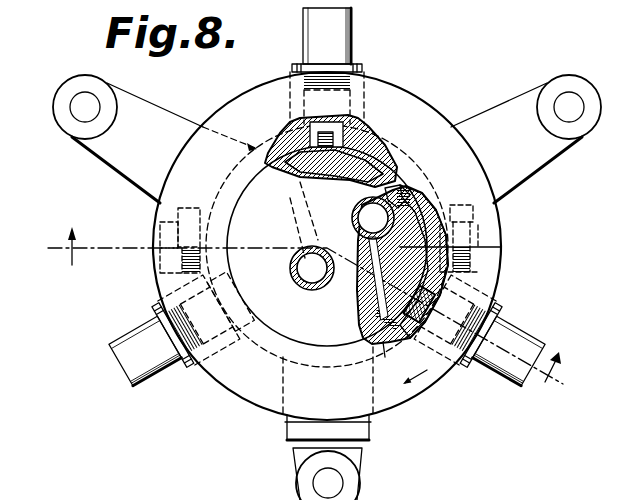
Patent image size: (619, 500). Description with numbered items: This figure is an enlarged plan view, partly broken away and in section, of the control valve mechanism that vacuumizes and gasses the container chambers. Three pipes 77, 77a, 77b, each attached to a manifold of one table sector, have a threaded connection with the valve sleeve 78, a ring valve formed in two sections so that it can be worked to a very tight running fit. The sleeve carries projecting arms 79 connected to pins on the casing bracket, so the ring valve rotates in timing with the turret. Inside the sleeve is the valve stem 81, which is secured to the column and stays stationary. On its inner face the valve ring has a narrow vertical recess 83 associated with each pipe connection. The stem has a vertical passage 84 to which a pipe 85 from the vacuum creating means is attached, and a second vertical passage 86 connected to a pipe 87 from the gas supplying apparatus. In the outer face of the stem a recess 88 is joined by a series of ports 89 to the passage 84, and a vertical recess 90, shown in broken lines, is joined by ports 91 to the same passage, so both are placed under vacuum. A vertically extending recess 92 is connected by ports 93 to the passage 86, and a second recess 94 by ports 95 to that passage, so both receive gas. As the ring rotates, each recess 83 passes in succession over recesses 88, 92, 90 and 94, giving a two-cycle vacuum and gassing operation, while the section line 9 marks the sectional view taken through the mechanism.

The section line 9- 9 is at (303, 315).
The pipe 77 is at (143, 355).
The pipe 77a is at (515, 367).
The pipe 77b is at (325, 37).
The valve sleeve 78 is at (477, 283).
The projecting arms 79 is at (138, 158).
The valve stem 81 is at (273, 318).
The recess 83 is at (303, 123).
The passage 84 is at (312, 278).
The pipe 85 is at (296, 266).
The passage 86 is at (370, 214).
The pipe 87 is at (352, 217).
The recess 88 is at (368, 160).
The ports 89 is at (350, 238).
The vertical recess 90 is at (500, 248).
The ports 91 is at (362, 270).
The recess 92 is at (410, 185).
The ports 93 is at (398, 180).
The recess 94 is at (385, 357).
The ports 95 is at (378, 300).